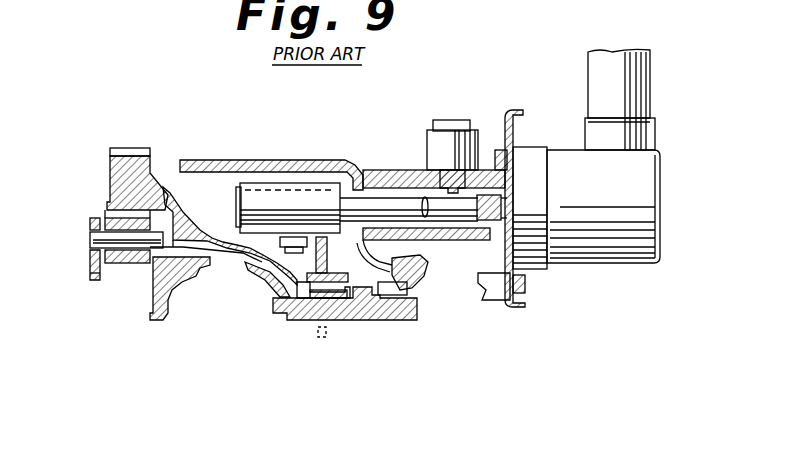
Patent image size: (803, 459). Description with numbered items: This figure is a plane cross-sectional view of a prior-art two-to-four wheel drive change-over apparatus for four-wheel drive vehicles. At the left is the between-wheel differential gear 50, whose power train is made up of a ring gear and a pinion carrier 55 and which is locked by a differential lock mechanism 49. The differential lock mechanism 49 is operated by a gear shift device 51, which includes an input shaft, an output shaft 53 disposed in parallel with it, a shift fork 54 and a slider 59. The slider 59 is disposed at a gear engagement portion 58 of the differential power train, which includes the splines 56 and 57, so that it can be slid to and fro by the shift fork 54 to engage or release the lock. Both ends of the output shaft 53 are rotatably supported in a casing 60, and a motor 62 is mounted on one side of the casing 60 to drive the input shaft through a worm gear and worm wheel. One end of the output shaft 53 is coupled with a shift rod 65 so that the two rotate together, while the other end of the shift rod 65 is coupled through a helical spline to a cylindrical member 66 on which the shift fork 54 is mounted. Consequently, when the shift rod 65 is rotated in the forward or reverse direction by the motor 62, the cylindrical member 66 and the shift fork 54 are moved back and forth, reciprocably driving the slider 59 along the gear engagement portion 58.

The differential lock mechanism 49 is at (400, 262).
The between-wheel differential gear 50 is at (106, 180).
The gear shift device 51 is at (350, 183).
The output shaft 53 is at (514, 196).
The shift fork 54 is at (320, 253).
The pinion carrier 55 is at (165, 200).
The spline 56 is at (335, 297).
The spline 57 is at (378, 290).
The gear engagement portion 58 is at (357, 307).
The slider 59 is at (368, 170).
The casing 60 is at (621, 265).
The motor 62 is at (652, 86).
The shift rod 65 is at (392, 178).
The cylindrical member 66 is at (294, 183).